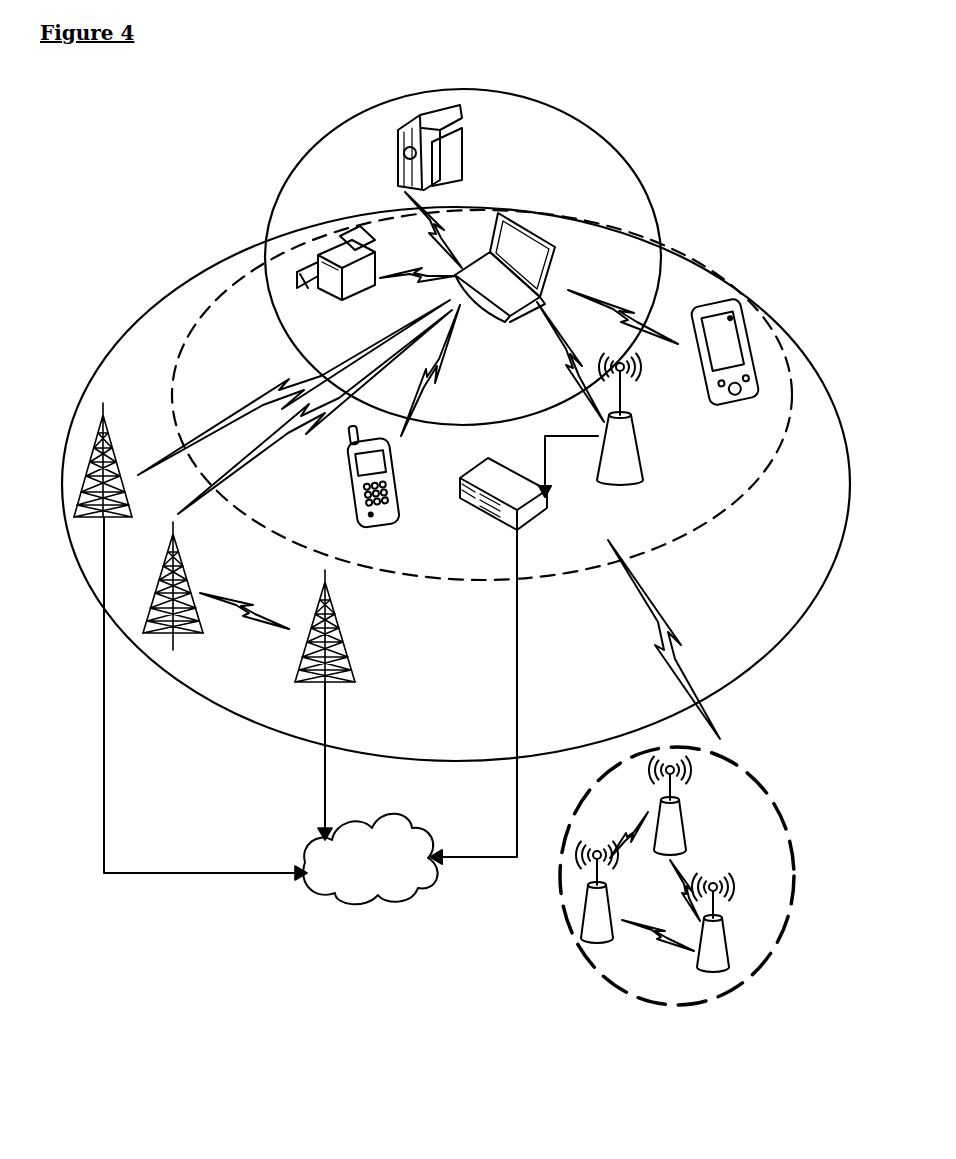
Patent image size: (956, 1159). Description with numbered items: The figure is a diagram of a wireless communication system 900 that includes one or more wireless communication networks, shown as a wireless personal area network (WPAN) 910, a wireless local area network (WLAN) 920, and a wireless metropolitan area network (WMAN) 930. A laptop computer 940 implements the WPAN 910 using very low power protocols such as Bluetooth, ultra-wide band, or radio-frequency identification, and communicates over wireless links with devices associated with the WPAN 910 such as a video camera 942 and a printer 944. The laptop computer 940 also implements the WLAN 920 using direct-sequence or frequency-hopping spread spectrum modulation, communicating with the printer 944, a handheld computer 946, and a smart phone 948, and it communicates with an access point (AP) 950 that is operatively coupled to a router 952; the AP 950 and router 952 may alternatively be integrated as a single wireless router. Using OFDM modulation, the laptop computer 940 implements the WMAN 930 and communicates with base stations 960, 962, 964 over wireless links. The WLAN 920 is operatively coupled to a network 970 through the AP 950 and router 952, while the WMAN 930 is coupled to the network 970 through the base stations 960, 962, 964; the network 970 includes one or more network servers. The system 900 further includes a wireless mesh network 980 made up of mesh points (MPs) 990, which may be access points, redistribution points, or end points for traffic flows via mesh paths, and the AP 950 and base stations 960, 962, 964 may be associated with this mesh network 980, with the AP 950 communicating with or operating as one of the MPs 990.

The wireless communication system 900 is at (690, 122).
The wireless personal area network 910 is at (268, 240).
The wireless local area network 920 is at (205, 300).
The wireless metropolitan area network 930 is at (143, 312).
The laptop computer 940 is at (540, 228).
The video camera 942 is at (462, 164).
The printer 944 is at (365, 296).
The handheld computer 946 is at (732, 404).
The smart phone 948 is at (393, 526).
The access point 950 is at (630, 482).
The router 952 is at (532, 524).
The base station 960 is at (106, 406).
The base station 962 is at (190, 590).
The base station 964 is at (345, 660).
The network 970 is at (422, 830).
The wireless mesh network 980 is at (682, 865).
The mesh points 990 is at (716, 850).